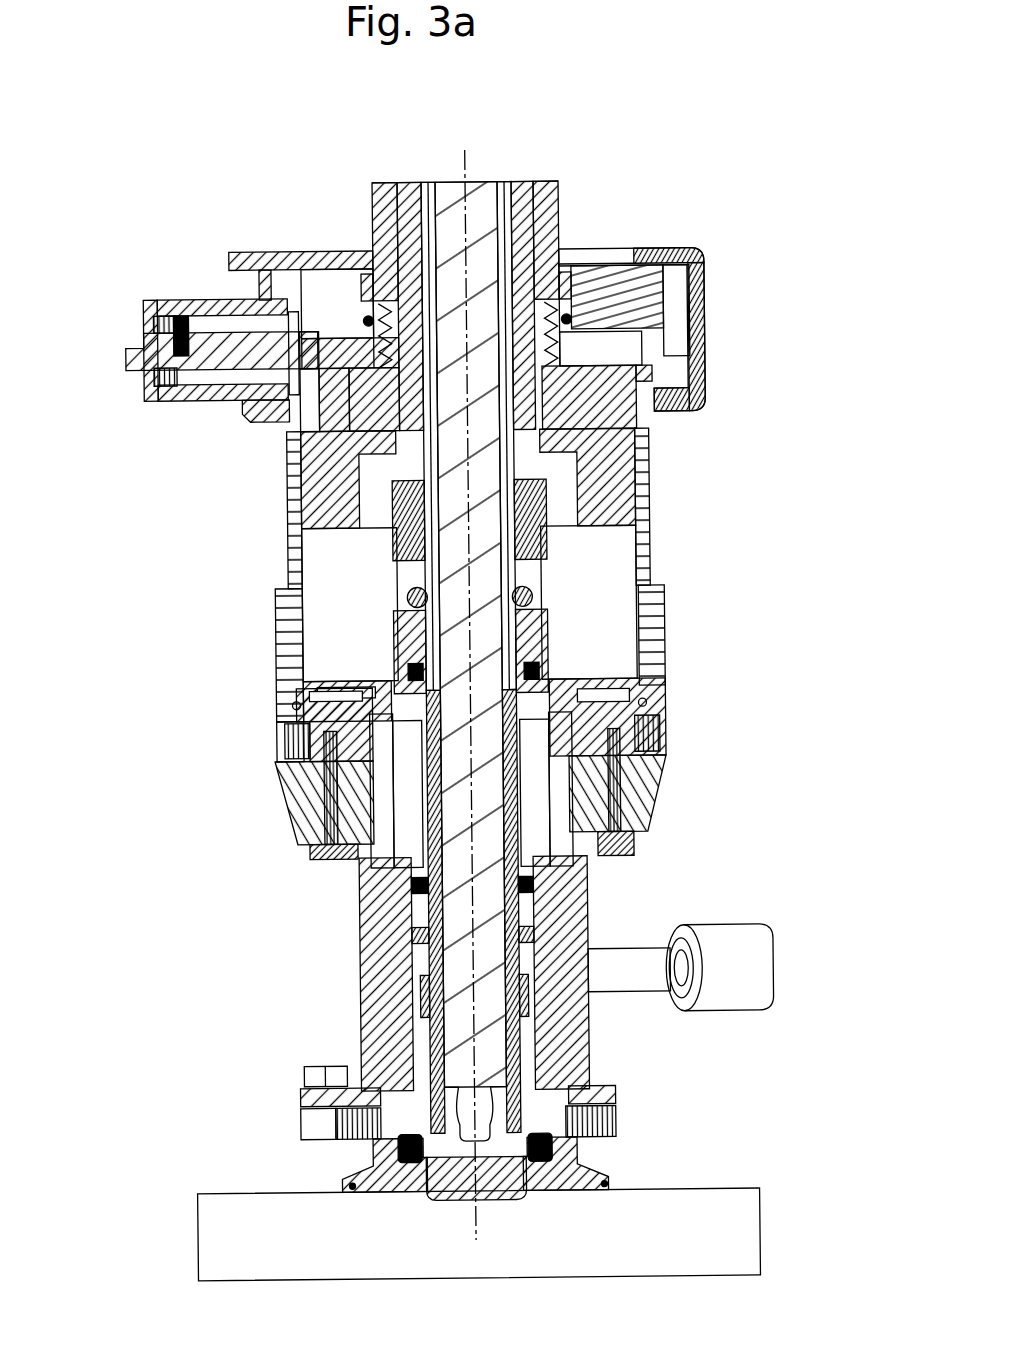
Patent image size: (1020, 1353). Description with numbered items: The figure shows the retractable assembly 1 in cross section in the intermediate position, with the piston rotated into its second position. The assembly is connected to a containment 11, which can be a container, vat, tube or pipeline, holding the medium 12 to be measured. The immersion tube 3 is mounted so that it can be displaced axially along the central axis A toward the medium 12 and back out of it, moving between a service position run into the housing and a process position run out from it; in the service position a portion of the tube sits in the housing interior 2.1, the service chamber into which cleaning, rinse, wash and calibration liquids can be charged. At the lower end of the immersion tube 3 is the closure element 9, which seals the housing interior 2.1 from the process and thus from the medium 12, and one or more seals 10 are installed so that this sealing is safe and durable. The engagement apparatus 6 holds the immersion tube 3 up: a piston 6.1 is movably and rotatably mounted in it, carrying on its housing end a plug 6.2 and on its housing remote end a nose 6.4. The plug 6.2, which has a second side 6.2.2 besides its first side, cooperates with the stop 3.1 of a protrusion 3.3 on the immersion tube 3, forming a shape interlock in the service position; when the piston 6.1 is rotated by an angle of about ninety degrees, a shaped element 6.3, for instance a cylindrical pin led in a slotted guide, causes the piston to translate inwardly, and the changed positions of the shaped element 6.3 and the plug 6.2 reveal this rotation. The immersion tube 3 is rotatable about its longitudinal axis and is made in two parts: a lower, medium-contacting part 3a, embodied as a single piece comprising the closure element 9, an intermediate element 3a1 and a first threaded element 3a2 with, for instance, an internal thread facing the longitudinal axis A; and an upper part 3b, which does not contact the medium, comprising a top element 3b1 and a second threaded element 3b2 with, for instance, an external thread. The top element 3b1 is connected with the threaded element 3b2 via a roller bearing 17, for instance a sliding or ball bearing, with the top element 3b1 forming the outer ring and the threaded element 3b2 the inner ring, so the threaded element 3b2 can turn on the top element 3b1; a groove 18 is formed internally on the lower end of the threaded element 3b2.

The retractable assembly 1 is at (447, 686).
The central axis A is at (483, 687).
The housing interior 2.1 is at (518, 1079).
The immersion tube 3 is at (476, 760).
The stop 3.1 is at (318, 333).
The protrusion 3.3 is at (347, 247).
The lower part 3a is at (531, 838).
The intermediate element 3a1 is at (633, 844).
The first threaded element 3a2 is at (650, 622).
The upper part 3b is at (474, 575).
The top element 3b1 is at (389, 552).
The second threaded element 3b2 is at (390, 627).
The engagement apparatus 6 is at (181, 362).
The piston 6.1 is at (195, 347).
The plug 6.2 is at (288, 403).
The second side 6.2.2 is at (305, 338).
The shaped element 6.3 is at (178, 390).
The nose 6.4 is at (123, 351).
The closure element 9 is at (428, 1165).
The seal 10 is at (553, 1139).
The containment 11 is at (739, 1260).
The medium 12 is at (399, 1248).
The roller bearing 17 is at (646, 587).
The groove 18 is at (395, 665).